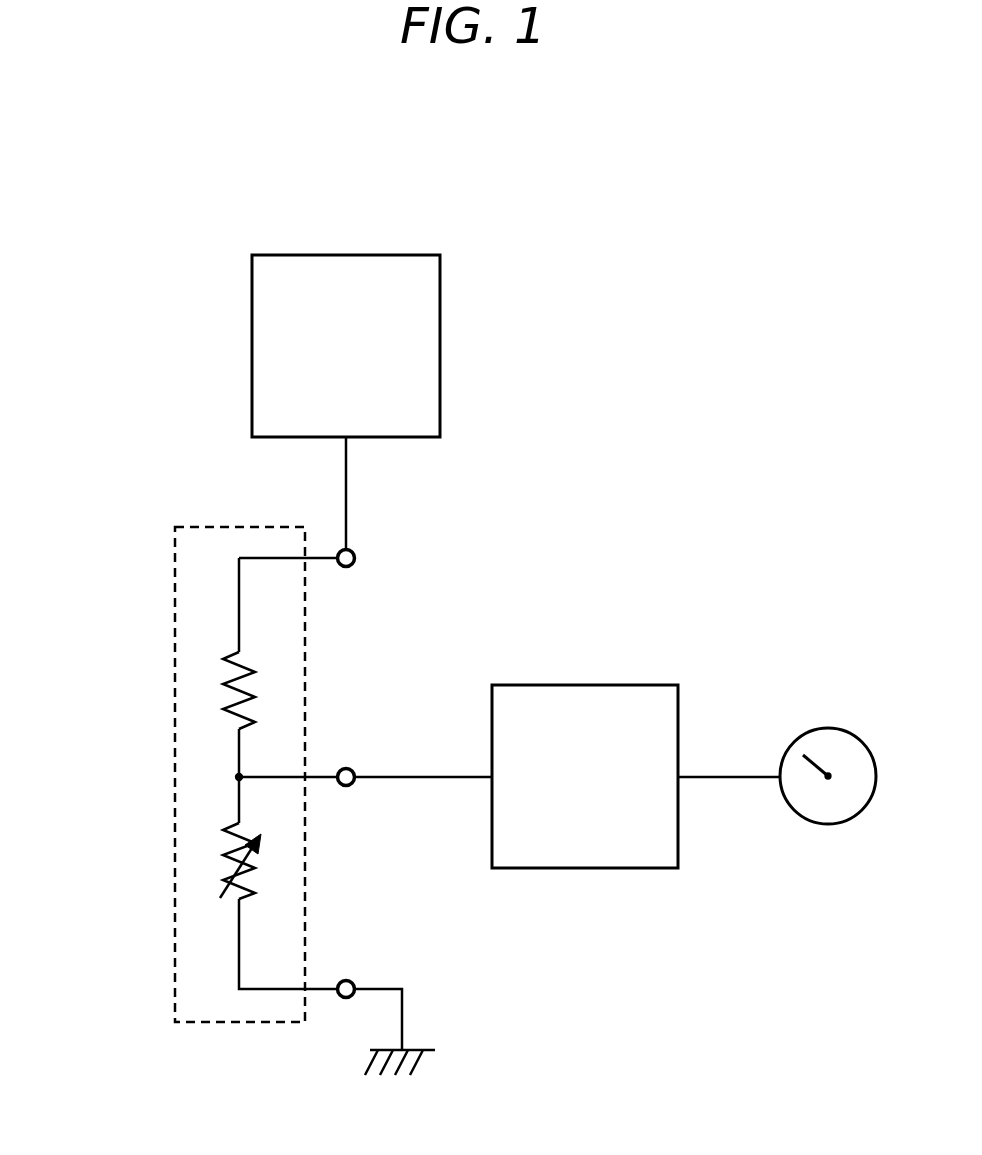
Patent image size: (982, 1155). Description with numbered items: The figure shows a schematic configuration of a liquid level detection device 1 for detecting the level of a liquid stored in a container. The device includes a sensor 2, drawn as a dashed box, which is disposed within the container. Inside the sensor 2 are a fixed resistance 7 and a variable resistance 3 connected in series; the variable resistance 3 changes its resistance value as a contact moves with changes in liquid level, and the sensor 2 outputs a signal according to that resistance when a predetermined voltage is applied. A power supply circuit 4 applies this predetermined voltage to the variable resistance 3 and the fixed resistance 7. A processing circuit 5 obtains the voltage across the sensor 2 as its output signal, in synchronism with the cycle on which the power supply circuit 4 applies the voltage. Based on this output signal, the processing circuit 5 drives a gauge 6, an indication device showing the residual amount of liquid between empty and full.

The liquid level detection device 1 is at (812, 289).
The sensor 2 is at (198, 521).
The variable resistance 3 is at (222, 867).
The power supply circuit 4 is at (365, 255).
The processing circuit 5 is at (604, 685).
The gauge 6 is at (833, 728).
The fixed resistance 7 is at (222, 695).